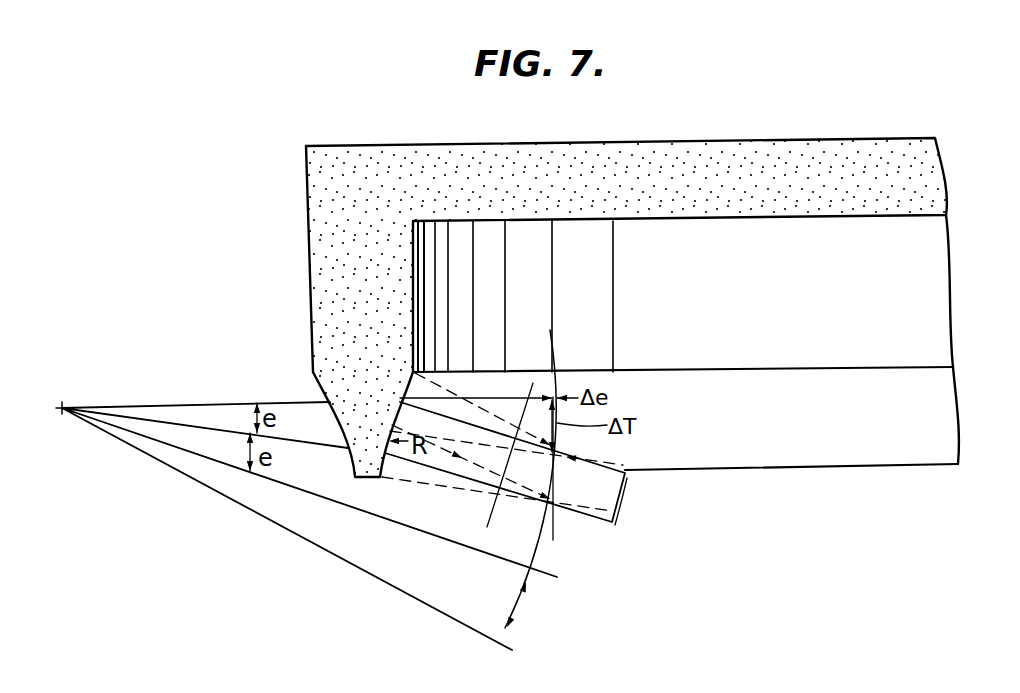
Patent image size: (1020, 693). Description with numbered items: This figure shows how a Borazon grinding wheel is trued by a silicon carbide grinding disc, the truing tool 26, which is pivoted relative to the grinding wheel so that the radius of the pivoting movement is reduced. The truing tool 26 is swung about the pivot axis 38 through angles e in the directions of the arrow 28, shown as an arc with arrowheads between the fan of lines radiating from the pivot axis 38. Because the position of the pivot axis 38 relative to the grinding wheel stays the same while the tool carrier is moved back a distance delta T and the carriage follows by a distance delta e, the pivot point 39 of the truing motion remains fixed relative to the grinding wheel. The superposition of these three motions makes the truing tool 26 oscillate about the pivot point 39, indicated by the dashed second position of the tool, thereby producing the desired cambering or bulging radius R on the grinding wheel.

The truing tool 26 is at (432, 423).
The arrow 28 is at (518, 606).
The pivot axis 38 is at (64, 406).
The pivot point 39 is at (560, 485).